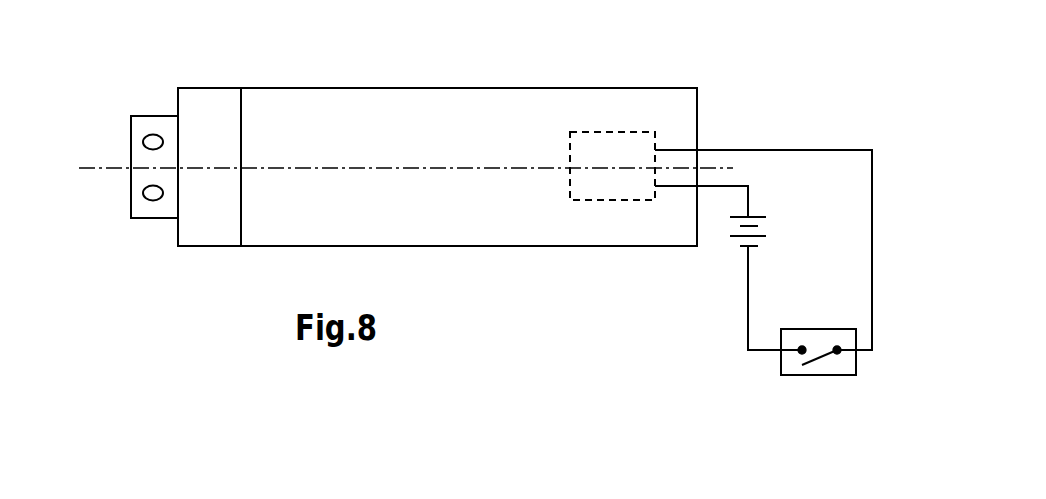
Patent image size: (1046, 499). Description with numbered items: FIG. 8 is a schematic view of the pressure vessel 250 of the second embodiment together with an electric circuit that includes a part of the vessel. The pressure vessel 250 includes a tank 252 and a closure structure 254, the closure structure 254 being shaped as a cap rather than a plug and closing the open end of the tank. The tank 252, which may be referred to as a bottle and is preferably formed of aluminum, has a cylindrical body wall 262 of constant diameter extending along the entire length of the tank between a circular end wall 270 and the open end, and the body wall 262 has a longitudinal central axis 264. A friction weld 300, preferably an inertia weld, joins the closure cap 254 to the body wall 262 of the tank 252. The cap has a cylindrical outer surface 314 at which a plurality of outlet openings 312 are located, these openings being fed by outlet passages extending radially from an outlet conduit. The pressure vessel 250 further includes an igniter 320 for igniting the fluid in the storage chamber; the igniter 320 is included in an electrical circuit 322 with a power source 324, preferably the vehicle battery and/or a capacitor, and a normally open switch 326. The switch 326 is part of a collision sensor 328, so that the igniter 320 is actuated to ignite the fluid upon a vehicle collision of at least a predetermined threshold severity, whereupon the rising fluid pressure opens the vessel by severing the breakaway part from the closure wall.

The pressure vessel 250 is at (139, 57).
The tank 252 is at (363, 88).
The closure structure 254 is at (210, 88).
The cylindrical body wall 262 is at (440, 88).
The longitudinal central axis 264 is at (116, 170).
The circular end wall 270 is at (698, 106).
The friction weld 300 is at (241, 108).
The outlet openings 312 is at (150, 134).
The cylindrical outer surface 314 is at (166, 210).
The igniter 320 is at (569, 187).
The electrical circuit 322 is at (790, 118).
The power source 324 is at (760, 235).
The normally open switch 326 is at (812, 375).
The collision sensor 328 is at (838, 375).